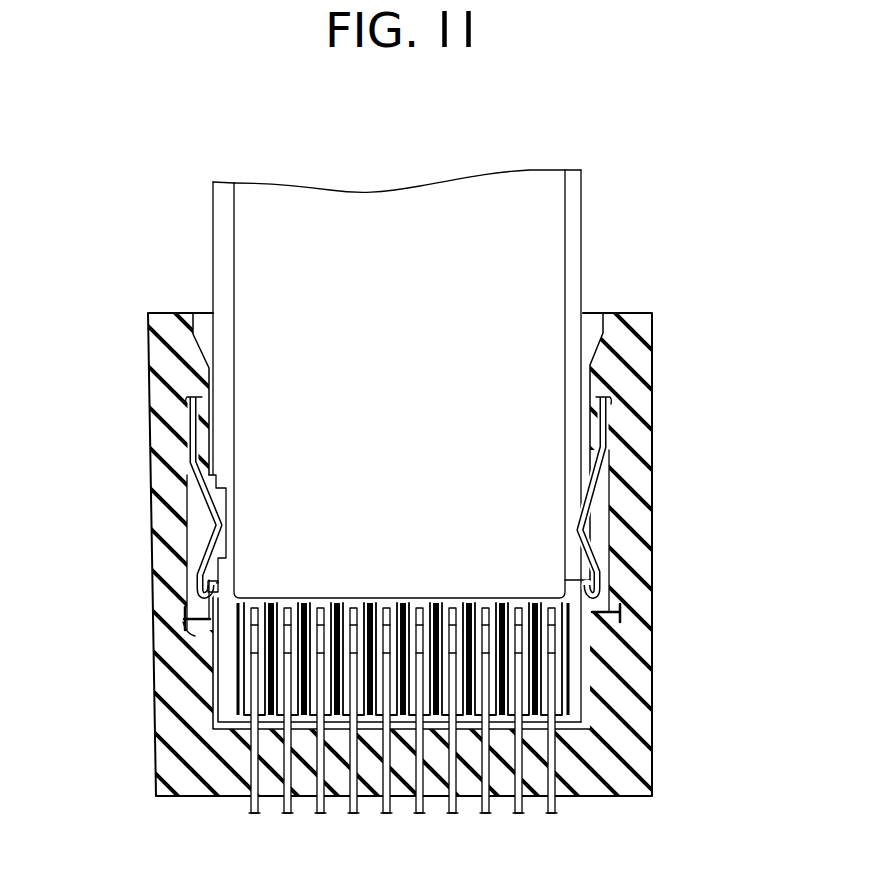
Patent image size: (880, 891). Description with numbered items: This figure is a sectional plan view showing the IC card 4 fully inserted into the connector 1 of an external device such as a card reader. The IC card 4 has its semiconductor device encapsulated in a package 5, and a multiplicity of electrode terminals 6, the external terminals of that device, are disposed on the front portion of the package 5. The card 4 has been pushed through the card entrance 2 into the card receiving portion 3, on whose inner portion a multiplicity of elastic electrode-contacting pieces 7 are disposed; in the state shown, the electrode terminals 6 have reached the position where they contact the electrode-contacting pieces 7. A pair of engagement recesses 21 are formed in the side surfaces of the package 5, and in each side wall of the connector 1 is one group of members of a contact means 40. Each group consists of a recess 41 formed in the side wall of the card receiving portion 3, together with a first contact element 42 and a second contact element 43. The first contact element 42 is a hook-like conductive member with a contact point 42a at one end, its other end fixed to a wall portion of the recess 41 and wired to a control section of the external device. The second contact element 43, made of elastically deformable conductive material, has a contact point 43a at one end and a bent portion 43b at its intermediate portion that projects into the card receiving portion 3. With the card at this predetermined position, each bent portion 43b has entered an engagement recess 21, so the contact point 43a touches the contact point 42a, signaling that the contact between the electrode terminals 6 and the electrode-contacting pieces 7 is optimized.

The connector 1 is at (630, 306).
The card entrance 2 is at (194, 327).
The card receiving portion 3 is at (214, 441).
The IC card 4 is at (585, 190).
The package 5 is at (447, 183).
The electrode terminals 6 is at (245, 702).
The elastic electrode-contacting pieces 7 is at (249, 806).
The engagement recess 21 is at (582, 506).
The contact means 40 is at (203, 545).
The recess 41 is at (188, 490).
The first contact element 42 is at (185, 630).
The contact point 42a is at (184, 608).
The second contact element 43 is at (200, 517).
The contact point 43a is at (200, 591).
The bent portion 43b is at (224, 531).